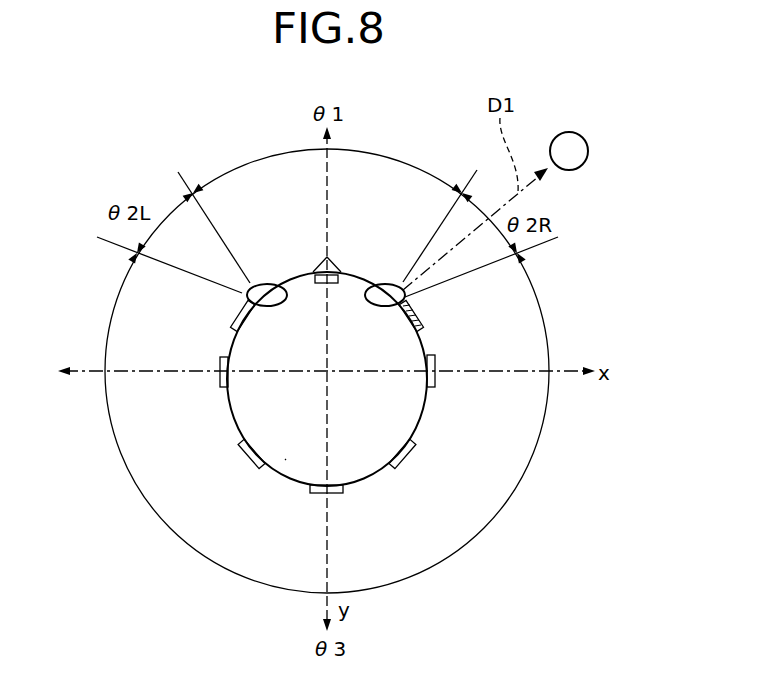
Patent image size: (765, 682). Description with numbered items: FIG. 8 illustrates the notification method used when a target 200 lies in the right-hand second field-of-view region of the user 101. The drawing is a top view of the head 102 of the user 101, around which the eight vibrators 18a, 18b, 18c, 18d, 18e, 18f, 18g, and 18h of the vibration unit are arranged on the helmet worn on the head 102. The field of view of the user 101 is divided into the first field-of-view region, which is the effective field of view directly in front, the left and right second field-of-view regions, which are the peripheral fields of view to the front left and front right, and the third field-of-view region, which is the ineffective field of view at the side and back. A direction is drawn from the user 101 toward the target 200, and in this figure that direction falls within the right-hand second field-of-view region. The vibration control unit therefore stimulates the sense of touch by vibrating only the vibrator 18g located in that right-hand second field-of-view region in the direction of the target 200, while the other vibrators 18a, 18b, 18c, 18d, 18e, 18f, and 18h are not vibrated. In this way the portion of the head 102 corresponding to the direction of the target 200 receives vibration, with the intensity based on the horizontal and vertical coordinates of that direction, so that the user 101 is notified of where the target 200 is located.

The vibrator 18a is at (250, 283).
The vibrator 18b is at (318, 495).
The vibrator 18c is at (220, 380).
The vibrator 18d is at (436, 378).
The vibrator 18e is at (236, 318).
The vibrator 18f is at (412, 452).
The vibrator 18g is at (422, 316).
The vibrator 18h is at (247, 457).
The user 101 is at (412, 486).
The head 102 is at (285, 460).
The target 200 is at (571, 133).